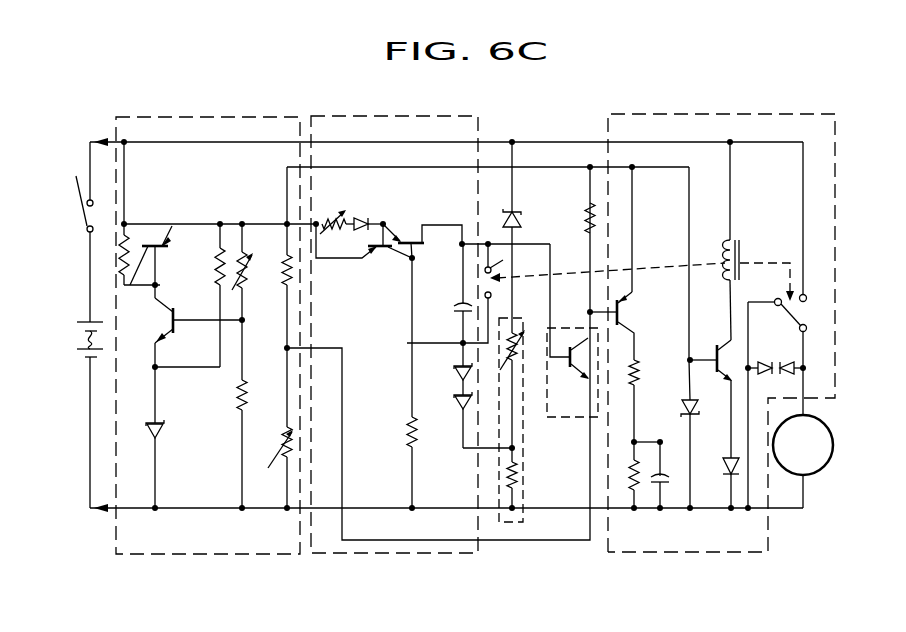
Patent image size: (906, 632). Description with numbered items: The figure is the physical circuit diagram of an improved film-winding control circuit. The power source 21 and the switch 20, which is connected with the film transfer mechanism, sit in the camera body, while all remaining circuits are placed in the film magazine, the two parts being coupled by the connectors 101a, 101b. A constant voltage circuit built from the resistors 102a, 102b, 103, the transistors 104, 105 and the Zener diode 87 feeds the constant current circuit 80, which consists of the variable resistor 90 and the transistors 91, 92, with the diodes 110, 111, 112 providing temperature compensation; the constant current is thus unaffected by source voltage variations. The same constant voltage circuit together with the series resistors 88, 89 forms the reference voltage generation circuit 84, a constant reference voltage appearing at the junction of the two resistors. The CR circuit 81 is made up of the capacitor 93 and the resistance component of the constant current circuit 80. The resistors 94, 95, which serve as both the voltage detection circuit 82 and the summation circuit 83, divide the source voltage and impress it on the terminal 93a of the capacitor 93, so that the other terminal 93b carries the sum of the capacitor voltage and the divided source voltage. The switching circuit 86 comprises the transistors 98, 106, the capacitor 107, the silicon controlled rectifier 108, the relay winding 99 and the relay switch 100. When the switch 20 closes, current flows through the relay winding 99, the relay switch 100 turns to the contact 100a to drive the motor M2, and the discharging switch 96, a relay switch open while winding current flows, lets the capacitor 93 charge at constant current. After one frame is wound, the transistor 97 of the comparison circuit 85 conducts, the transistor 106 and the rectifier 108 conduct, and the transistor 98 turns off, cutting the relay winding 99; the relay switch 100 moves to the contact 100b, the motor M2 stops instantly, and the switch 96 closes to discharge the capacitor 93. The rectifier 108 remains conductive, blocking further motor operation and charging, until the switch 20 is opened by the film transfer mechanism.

The switch 20 is at (75, 232).
The power source 21 is at (104, 350).
The reference voltage generation circuit 84 is at (150, 555).
The constant current circuit 80 is at (394, 367).
The CR circuit 81 is at (358, 554).
The voltage detection circuit 82 is at (530, 453).
The summation circuit 83 is at (517, 523).
The comparison circuit 85 is at (553, 418).
The switching circuit 86 is at (714, 553).
The Zener diode 87 is at (160, 440).
The resistor 88 is at (285, 267).
The resistor 89 is at (270, 428).
The variable resistor 90 is at (326, 220).
The transistor 91 is at (377, 253).
The transistor 92 is at (422, 251).
The capacitor 93 is at (455, 308).
The capacitor terminal 93a is at (428, 330).
The capacitor terminal 93b is at (464, 240).
The resistor 94 is at (524, 330).
The resistor 95 is at (522, 476).
The discharging switch 96 is at (503, 260).
The transistor 97 is at (573, 368).
The transistor 98 is at (717, 344).
The relay winding 99 is at (733, 240).
The relay switch 100 is at (775, 354).
The contact 100a is at (803, 293).
The contact 100b is at (776, 299).
The connector 101a is at (91, 140).
The connector 101b is at (91, 512).
The resistor 102a is at (190, 295).
The resistor 102b is at (77, 303).
The resistor 103 is at (227, 278).
The transistor 104 is at (156, 236).
The transistor 105 is at (184, 327).
The transistor 106 is at (630, 303).
The capacitor 107 is at (662, 472).
The silicon controlled rectifier 108 is at (688, 400).
The diode 110 is at (368, 220).
The diode 111 is at (457, 406).
The diode 112 is at (457, 372).
The motor M2 is at (803, 461).